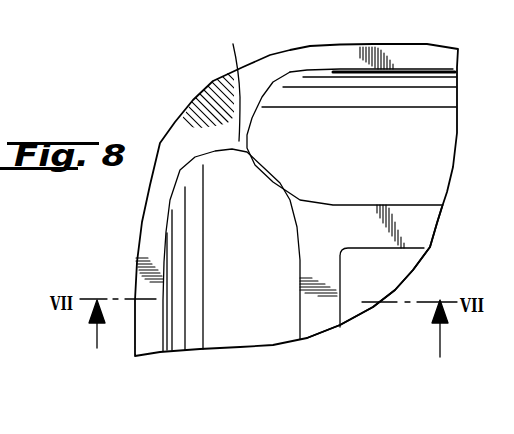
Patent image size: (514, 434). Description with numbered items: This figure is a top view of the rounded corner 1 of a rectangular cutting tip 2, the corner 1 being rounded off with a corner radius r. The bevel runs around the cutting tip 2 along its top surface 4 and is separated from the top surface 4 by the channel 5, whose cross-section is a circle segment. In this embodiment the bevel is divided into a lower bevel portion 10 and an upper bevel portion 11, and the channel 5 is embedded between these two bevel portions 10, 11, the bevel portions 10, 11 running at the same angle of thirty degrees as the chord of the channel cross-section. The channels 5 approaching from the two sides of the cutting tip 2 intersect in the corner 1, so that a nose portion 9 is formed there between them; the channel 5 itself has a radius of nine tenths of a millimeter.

The corner 1 is at (163, 130).
The cutting tip 2 is at (361, 312).
The top surface 4 is at (380, 290).
The channel 5 is at (248, 287).
The nose portion 9 is at (233, 82).
The lower bevel portion 10 is at (437, 52).
The upper bevel portion 11 is at (423, 223).
The corner radius r is at (193, 99).